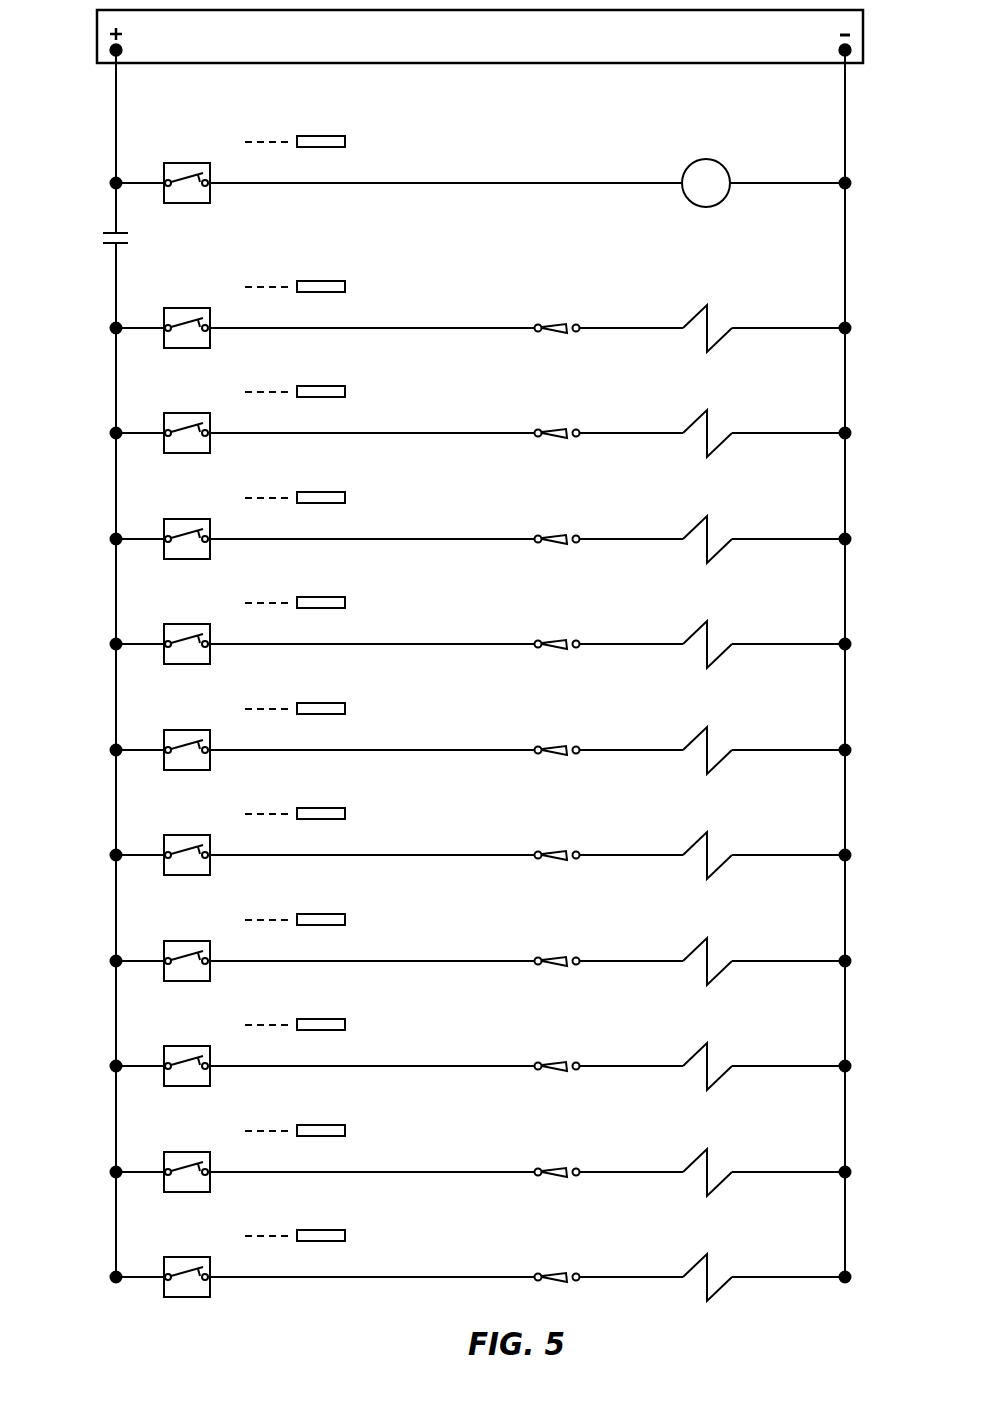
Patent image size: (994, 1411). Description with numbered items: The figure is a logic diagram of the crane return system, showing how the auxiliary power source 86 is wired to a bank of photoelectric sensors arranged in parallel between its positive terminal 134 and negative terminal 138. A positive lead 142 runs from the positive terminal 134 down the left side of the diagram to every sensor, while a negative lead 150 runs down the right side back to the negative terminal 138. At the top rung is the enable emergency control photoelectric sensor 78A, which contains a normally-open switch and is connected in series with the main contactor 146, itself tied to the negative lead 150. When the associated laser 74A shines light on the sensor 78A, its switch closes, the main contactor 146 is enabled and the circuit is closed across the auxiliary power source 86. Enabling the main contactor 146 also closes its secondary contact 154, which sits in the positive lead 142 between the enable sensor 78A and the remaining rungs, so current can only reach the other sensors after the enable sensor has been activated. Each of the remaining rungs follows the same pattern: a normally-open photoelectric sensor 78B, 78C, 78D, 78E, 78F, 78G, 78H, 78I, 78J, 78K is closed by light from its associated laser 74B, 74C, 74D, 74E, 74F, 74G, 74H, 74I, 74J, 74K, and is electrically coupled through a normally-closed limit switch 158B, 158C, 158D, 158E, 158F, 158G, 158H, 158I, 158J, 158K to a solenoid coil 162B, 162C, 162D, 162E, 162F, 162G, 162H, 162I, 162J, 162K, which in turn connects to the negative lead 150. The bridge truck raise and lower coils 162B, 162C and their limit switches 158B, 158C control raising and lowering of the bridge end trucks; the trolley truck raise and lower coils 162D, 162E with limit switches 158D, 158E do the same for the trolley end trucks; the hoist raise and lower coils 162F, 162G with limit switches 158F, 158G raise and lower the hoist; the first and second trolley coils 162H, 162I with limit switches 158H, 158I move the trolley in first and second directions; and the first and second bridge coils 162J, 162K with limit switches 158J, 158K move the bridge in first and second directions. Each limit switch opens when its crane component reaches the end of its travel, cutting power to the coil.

The auxiliary power source 86 is at (477, 51).
The positive terminal 134 is at (112, 51).
The negative terminal 138 is at (850, 50).
The positive lead 142 is at (116, 148).
The main contactor 146 is at (696, 161).
The negative lead 150 is at (847, 131).
The secondary contact 154 is at (110, 246).
The laser 74A is at (325, 138).
The laser 74B is at (326, 283).
The laser 74C is at (326, 388).
The laser 74D is at (326, 494).
The laser 74E is at (326, 599).
The laser 74F is at (326, 705).
The laser 74G is at (326, 810).
The laser 74H is at (326, 916).
The laser 74I is at (326, 1021).
The laser 74J is at (326, 1127).
The laser 74K is at (326, 1232).
The enable emergency control photoelectric sensor 78A is at (176, 165).
The emergency raise photoelectric sensor 78B is at (178, 312).
The emergency lower photoelectric sensor 78C is at (175, 416).
The emergency raise photoelectric sensor 78D is at (175, 522).
The emergency lower photoelectric sensor 78E is at (175, 627).
The emergency raise photoelectric sensor 78F is at (175, 733).
The emergency lower photoelectric sensor 78G is at (175, 838).
The emergency left photoelectric sensor 78H is at (175, 944).
The emergency right photoelectric sensor 78I is at (175, 1049).
The emergency forward photoelectric sensor 78J is at (175, 1155).
The emergency right photoelectric sensor 78K is at (175, 1260).
The bridge truck raise limit switch 158B is at (561, 325).
The bridge truck lower limit switch 158C is at (561, 430).
The trolley truck raise limit switch 158D is at (561, 536).
The trolley truck lower limit switch 158E is at (561, 641).
The hoist raise limit switch 158F is at (561, 747).
The hoist lower limit switch 158G is at (561, 852).
The first trolley limit switch 158H is at (561, 958).
The second trolley limit switch 158I is at (561, 1063).
The first bridge limit switch 158J is at (561, 1169).
The second bridge limit switch 158K is at (561, 1274).
The bridge truck raise coil 162B is at (697, 314).
The bridge truck lower coil 162C is at (697, 419).
The trolley truck raise coil 162D is at (697, 525).
The trolley truck lower coil 162E is at (697, 630).
The hoist raise coil 162F is at (697, 736).
The hoist lower coil 162G is at (697, 841).
The first trolley coil 162H is at (697, 947).
The second trolley coil 162I is at (697, 1052).
The first bridge coil 162J is at (697, 1158).
The second bridge coil 162K is at (697, 1263).